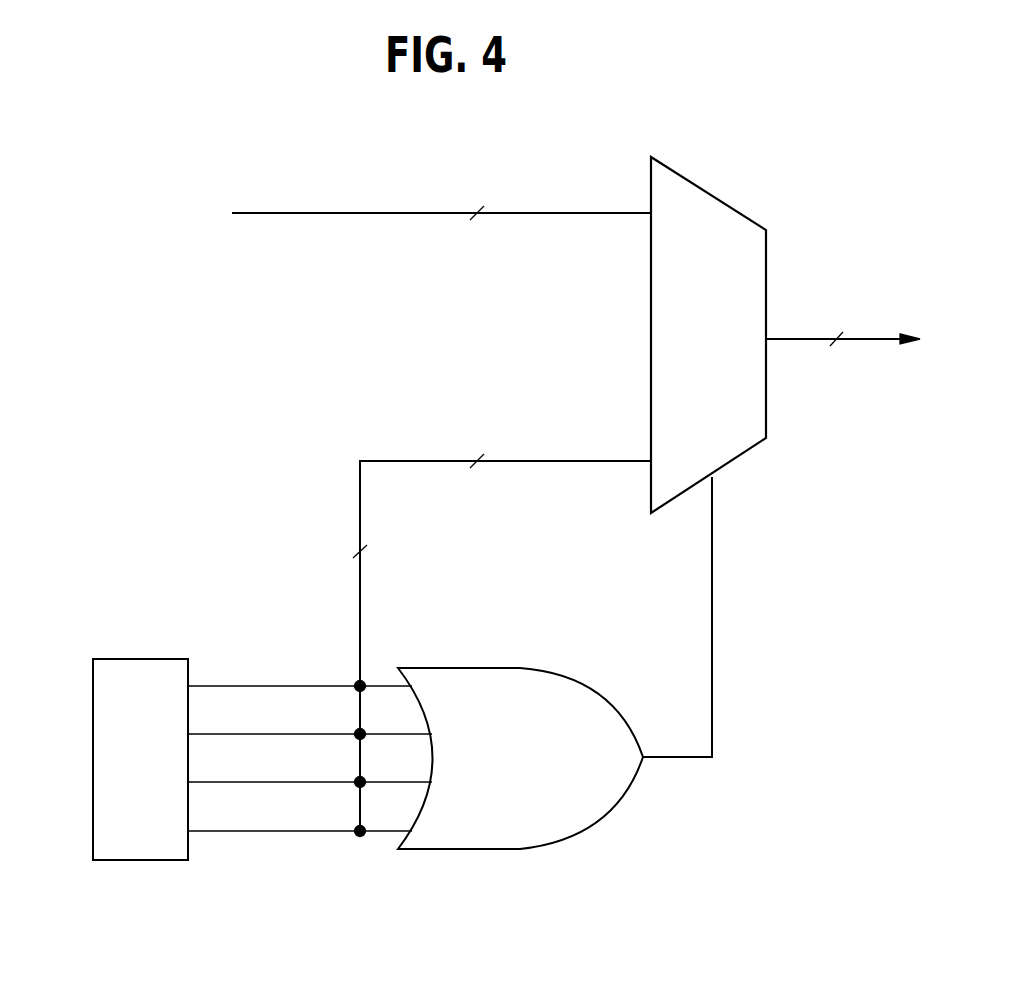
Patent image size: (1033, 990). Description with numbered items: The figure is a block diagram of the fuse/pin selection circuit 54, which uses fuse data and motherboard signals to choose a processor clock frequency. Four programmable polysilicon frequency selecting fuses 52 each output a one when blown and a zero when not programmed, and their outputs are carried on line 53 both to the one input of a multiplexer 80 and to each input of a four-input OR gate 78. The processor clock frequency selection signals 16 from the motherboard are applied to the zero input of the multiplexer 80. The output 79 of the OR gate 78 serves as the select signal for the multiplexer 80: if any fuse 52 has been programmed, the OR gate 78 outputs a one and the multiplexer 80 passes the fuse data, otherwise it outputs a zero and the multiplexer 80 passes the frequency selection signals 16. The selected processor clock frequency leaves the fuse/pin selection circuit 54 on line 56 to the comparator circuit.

The processor clock frequency selection signals 16 is at (350, 212).
The multiplexer 80 is at (731, 208).
The line 56 is at (812, 338).
The line 53 is at (390, 460).
The output of OR gate 79 is at (713, 588).
The frequency selecting fuses 52 is at (105, 658).
The four-input OR gate 78 is at (585, 827).
The fuse/pin selection circuit 54 is at (485, 958).